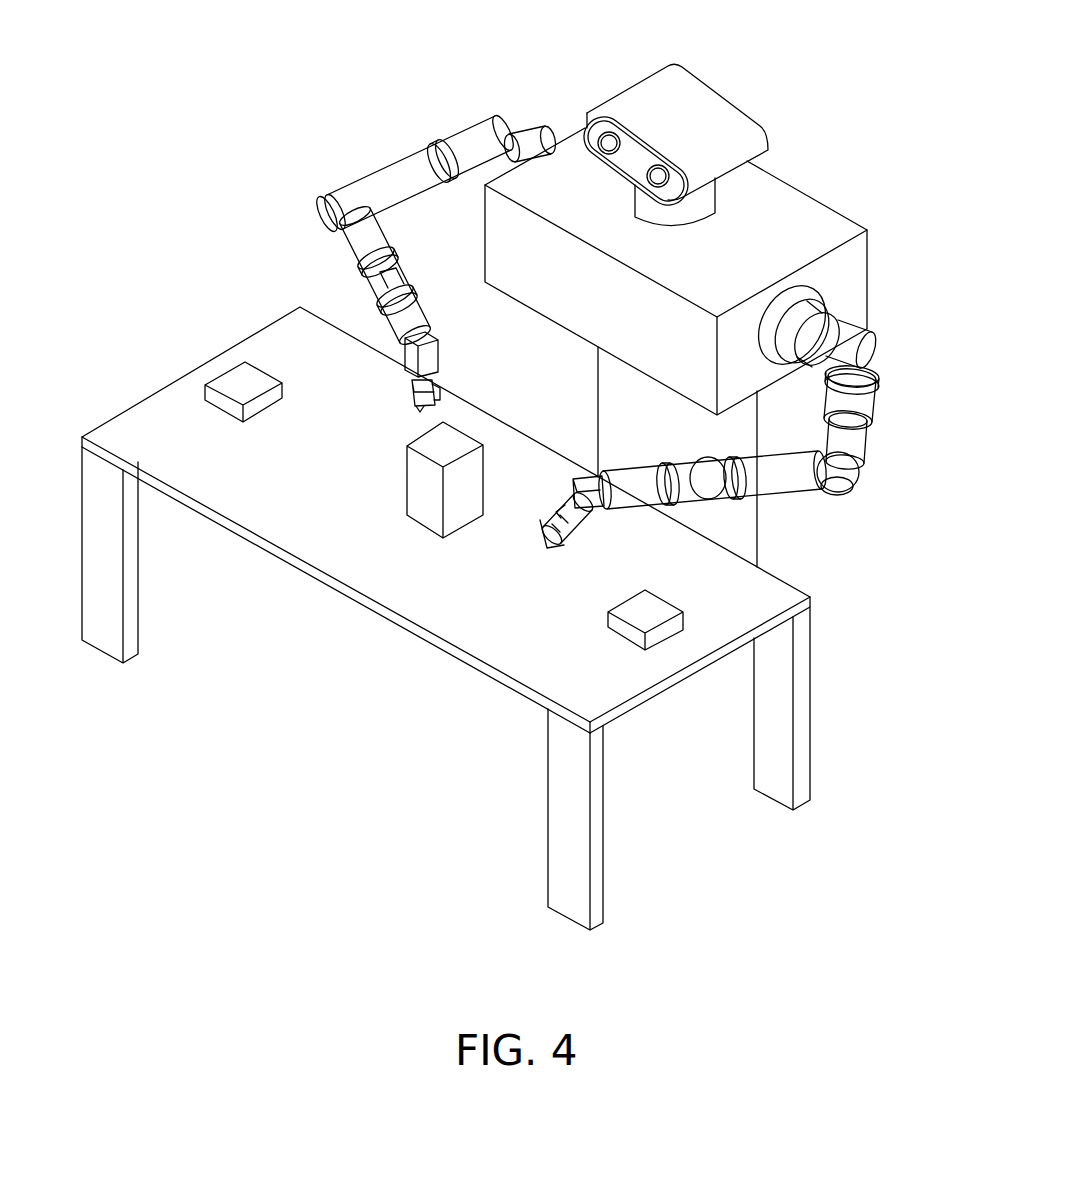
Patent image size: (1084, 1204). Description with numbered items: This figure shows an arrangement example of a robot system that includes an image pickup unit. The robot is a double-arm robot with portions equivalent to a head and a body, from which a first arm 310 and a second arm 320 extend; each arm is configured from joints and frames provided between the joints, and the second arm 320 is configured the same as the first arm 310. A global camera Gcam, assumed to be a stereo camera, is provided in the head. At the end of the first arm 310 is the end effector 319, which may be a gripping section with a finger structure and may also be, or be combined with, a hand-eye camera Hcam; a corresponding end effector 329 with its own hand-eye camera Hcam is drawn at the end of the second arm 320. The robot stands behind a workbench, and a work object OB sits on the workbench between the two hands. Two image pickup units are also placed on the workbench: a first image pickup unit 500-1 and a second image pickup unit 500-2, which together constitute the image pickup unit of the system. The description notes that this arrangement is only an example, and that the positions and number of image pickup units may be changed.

The first arm 310 is at (407, 174).
The end effector 319 is at (420, 407).
The second arm 320 is at (857, 410).
The second hand (end effector of right arm) 329 is at (547, 530).
The global camera Gcam is at (632, 150).
The hand-eye camera Hcam is at (440, 393).
The work object OB is at (428, 517).
The first image pickup unit 500-1 is at (625, 633).
The second image pickup unit 500-2 is at (227, 405).